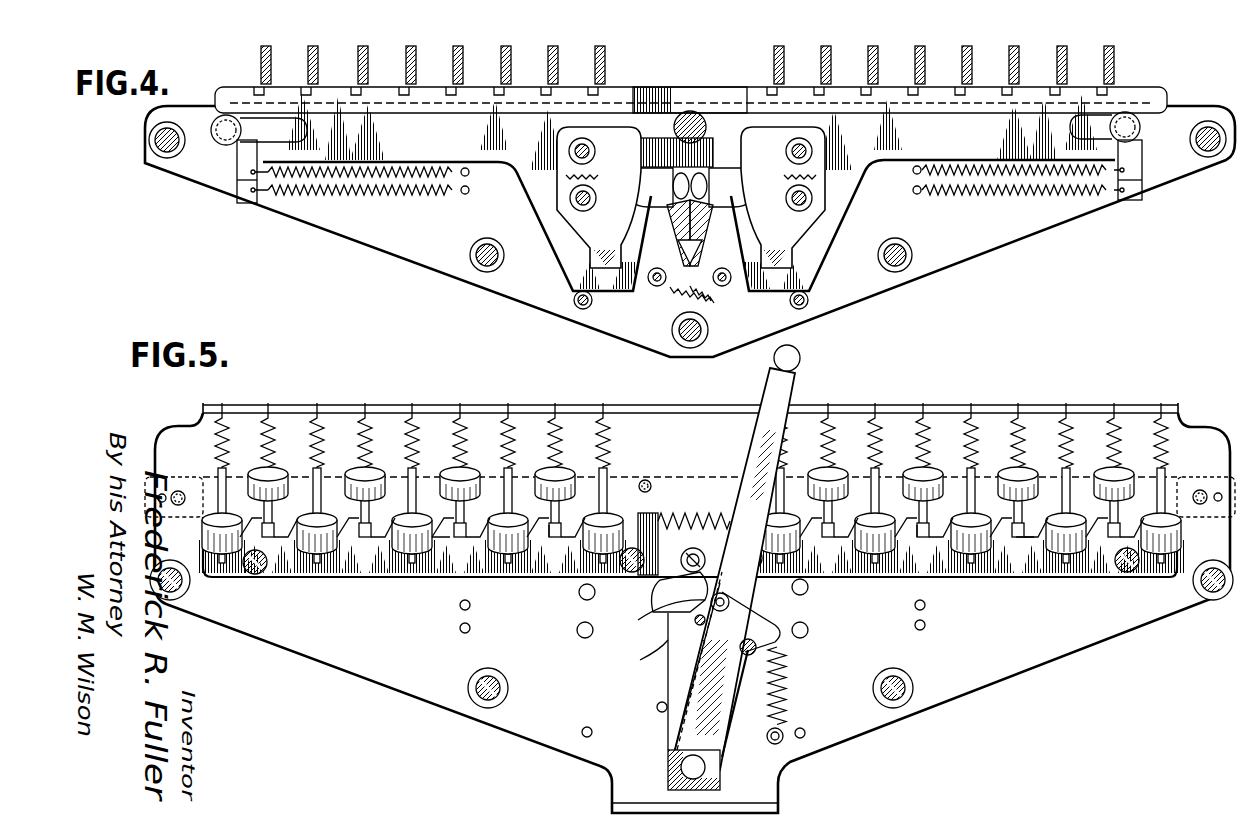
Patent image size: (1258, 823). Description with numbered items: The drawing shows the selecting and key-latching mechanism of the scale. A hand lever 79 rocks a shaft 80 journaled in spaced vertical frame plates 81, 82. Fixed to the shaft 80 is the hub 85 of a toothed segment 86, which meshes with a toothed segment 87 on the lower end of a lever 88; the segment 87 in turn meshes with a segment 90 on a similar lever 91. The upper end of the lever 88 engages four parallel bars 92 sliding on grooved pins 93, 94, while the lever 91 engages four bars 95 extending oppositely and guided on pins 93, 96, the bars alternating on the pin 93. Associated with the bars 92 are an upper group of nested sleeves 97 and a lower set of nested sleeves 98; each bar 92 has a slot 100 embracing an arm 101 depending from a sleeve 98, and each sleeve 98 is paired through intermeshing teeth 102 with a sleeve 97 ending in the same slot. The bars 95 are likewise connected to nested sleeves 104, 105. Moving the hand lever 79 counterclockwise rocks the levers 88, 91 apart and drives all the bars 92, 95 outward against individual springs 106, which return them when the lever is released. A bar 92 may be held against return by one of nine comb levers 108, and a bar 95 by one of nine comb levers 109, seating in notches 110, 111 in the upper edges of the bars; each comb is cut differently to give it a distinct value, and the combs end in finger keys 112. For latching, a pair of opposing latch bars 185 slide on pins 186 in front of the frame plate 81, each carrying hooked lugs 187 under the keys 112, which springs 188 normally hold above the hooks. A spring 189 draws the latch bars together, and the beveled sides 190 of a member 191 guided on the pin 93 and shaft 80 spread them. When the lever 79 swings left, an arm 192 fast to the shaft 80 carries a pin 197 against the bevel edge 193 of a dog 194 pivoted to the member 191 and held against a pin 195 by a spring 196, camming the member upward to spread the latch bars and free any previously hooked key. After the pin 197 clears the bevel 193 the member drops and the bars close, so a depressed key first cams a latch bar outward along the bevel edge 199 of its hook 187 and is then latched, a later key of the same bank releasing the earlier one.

In FIG. 5, the hand lever 79 is at (797, 377).
In FIG. 4, the shaft 80 is at (673, 330).
In FIG. 5, the shaft 80 is at (700, 770).
In FIG. 5, the frame plate 81 is at (975, 683).
In FIG. 4, the frame plate 82 is at (540, 297).
In FIG. 4, the hub 85 is at (703, 343).
In FIG. 4, the toothed segment 86 is at (713, 323).
In FIG. 4, the toothed segment 87 is at (722, 300).
In FIG. 4, the lever 88 is at (697, 233).
In FIG. 4, the segment 90 is at (678, 295).
In FIG. 4, the lever 91 is at (673, 228).
In FIG. 4, the bars 92 is at (888, 152).
In FIG. 4, the pin 93 is at (688, 112).
In FIG. 5, the pin 93 is at (693, 548).
In FIG. 4, the pin 94 is at (1130, 123).
In FIG. 4, the bars 95 is at (486, 152).
In FIG. 4, the pin 96 is at (240, 128).
In FIG. 4, the nested rods or sleeves 97 is at (794, 141).
In FIG. 4, the nested rods or sleeves 98 is at (807, 197).
In FIG. 4, the slot 100 is at (800, 230).
In FIG. 4, the arm 101 is at (803, 297).
In FIG. 4, the intermeshing teeth 102 is at (803, 173).
In FIG. 4, the nested sleeves or rods 104 is at (560, 143).
In FIG. 4, the nested sleeves or rods 105 is at (575, 200).
In FIG. 4, the springs 106 is at (987, 173).
In FIG. 4, the comb levers 108 is at (1013, 68).
In FIG. 4, the comb levers 109 is at (503, 67).
In FIG. 4, the notches 110 is at (356, 92).
In FIG. 4, the notches 111 is at (840, 97).
In FIG. 5, the finger keys 112 is at (823, 495).
In FIG. 5, the latch bars 185 is at (917, 570).
In FIG. 5, the pins 186 is at (1130, 568).
In FIG. 5, the hooked lugs 187 is at (1030, 527).
In FIG. 5, the springs 188 is at (1010, 437).
In FIG. 5, the spring 189 is at (682, 515).
In FIG. 5, the beveled sides 190 is at (657, 610).
In FIG. 5, the member 191 is at (673, 723).
In FIG. 5, the arm 192 is at (742, 677).
In FIG. 5, the bevel edge 193 is at (677, 680).
In FIG. 5, the dog 194 is at (760, 620).
In FIG. 5, the pin 195 is at (672, 652).
In FIG. 5, the spring 196 is at (788, 700).
In FIG. 5, the pin 197 is at (757, 647).
In FIG. 5, the bevel edge 199 is at (925, 513).